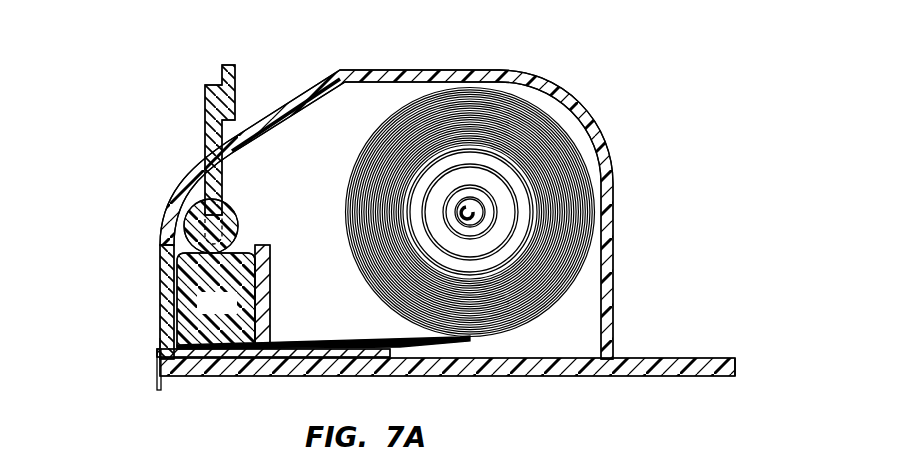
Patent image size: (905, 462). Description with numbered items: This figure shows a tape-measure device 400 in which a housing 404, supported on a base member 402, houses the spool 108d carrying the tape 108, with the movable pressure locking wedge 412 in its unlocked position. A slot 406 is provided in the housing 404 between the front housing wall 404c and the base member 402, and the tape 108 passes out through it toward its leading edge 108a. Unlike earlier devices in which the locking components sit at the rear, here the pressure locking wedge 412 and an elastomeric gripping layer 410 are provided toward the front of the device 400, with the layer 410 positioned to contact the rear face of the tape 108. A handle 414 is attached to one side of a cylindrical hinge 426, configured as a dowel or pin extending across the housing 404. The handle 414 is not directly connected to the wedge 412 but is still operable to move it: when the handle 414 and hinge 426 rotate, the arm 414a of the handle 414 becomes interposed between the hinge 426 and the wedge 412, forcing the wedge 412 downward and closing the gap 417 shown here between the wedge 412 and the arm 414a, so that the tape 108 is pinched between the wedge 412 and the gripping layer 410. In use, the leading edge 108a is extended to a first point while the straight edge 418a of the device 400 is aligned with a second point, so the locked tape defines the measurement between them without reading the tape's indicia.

The device 400 is at (627, 97).
The base member 402 is at (520, 370).
The housing 404 is at (610, 273).
The front housing wall 404c is at (166, 283).
The slot 406 is at (156, 343).
The elastomeric gripping layer 410 is at (262, 358).
The movable pressure locking wedge 412 is at (236, 313).
The handle 414 is at (205, 88).
The arm 414a is at (182, 238).
The gap 417 is at (235, 250).
The straight edge 418a is at (737, 367).
The hinge 426 is at (232, 222).
The tape 108 is at (357, 348).
The leading edge 108a is at (155, 382).
The spool 108d is at (360, 142).